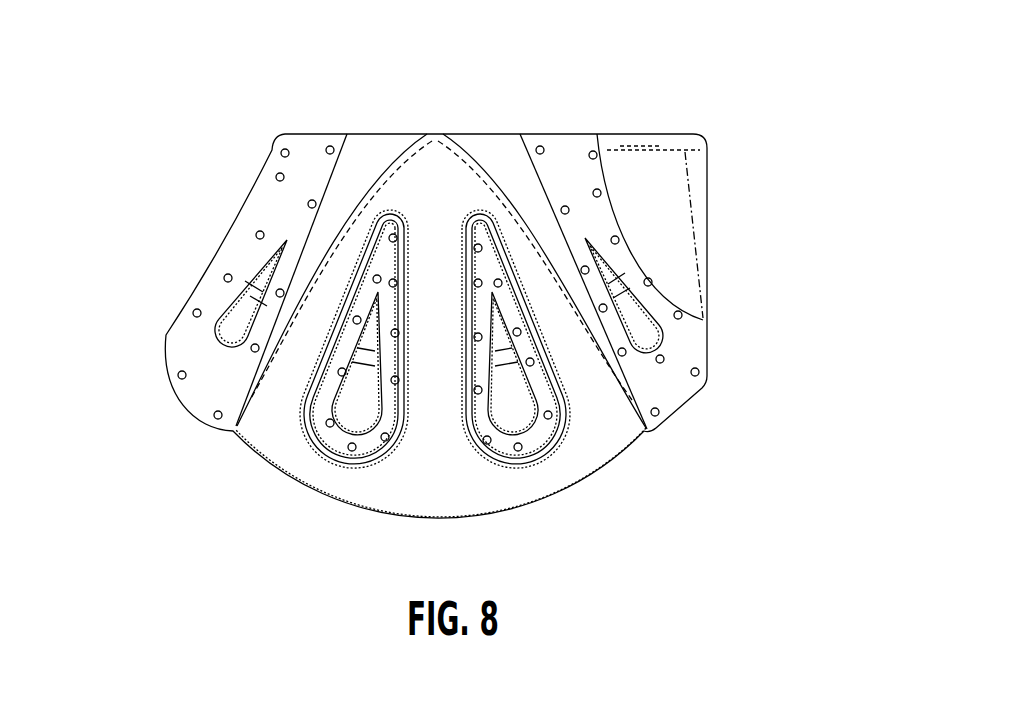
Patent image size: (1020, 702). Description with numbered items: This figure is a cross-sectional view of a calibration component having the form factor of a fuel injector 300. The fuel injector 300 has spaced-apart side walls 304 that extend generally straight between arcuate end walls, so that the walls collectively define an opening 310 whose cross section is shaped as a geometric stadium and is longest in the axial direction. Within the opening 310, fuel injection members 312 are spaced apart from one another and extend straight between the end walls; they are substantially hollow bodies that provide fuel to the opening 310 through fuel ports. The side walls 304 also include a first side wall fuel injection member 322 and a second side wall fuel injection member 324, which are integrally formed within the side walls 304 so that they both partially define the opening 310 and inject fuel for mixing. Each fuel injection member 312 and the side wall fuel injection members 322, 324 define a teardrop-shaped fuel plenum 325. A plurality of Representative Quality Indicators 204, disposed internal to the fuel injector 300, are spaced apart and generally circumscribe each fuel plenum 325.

The fuel injector 300 is at (697, 78).
The opening 310 is at (438, 166).
The side walls 304 is at (247, 255).
The first side wall fuel injection member 322 is at (210, 292).
The second side wall fuel injection member 324 is at (675, 300).
The fuel injection member 312 is at (367, 448).
The fuel plenum 325 is at (221, 320).
The Representative Quality Indicators 204 is at (541, 146).